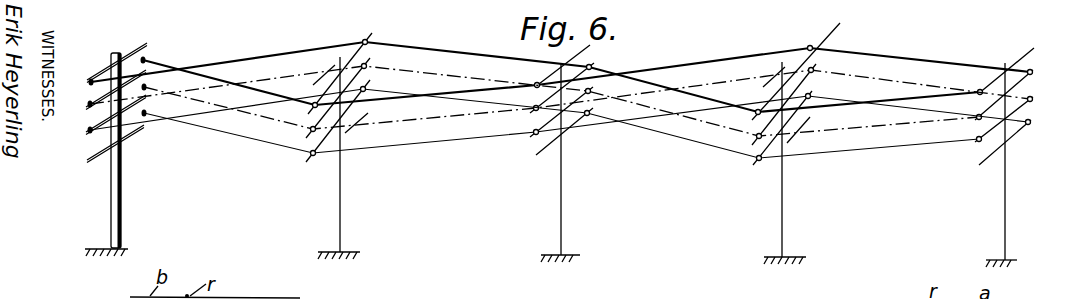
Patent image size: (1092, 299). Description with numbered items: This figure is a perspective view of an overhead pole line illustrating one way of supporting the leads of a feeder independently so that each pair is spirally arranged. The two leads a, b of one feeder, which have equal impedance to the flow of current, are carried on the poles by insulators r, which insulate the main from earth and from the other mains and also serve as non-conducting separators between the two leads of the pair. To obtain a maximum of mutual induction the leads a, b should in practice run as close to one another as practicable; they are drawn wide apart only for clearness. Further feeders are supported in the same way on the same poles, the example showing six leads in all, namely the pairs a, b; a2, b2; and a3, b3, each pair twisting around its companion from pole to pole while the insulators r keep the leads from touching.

The lead a is at (88, 83).
The lead a2 is at (978, 116).
The lead a3 is at (978, 140).
The lead b is at (146, 61).
The lead b2 is at (148, 88).
The lead b3 is at (147, 116).
The insulator r is at (92, 77).